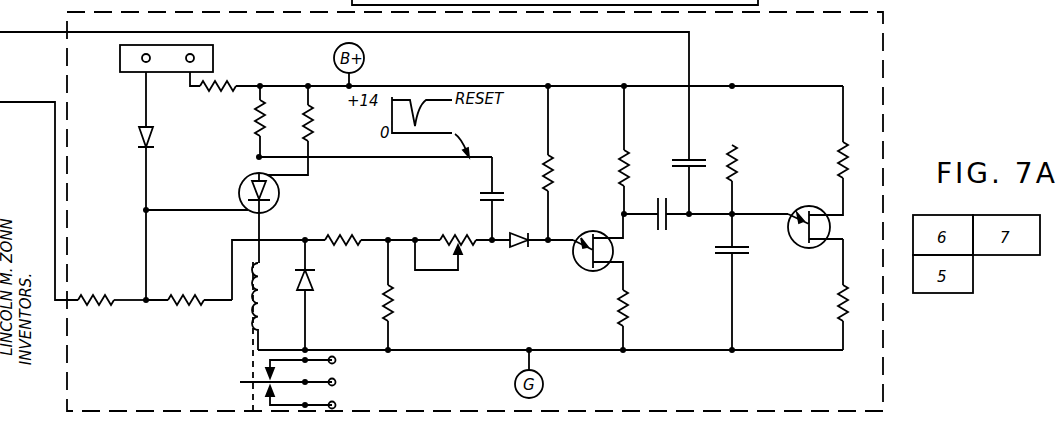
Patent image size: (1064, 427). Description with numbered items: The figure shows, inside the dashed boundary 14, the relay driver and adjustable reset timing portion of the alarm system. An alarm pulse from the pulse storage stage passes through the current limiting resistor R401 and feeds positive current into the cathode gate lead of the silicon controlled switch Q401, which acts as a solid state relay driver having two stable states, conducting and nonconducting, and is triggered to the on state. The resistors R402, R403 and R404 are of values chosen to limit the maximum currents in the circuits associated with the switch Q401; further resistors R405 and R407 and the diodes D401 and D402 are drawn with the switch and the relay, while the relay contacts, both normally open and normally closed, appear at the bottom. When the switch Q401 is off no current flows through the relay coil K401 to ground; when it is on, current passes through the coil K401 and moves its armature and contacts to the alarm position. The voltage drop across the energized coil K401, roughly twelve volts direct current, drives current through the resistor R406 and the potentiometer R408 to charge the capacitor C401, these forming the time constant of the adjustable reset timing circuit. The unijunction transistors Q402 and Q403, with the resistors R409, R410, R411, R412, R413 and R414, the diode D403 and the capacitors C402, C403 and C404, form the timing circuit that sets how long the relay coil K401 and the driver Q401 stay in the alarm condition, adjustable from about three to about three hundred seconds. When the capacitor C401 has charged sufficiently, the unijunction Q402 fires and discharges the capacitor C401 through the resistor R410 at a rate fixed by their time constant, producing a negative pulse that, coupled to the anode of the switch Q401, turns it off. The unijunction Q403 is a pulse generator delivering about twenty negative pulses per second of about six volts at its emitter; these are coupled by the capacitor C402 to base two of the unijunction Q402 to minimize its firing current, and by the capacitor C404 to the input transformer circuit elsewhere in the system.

The timer circuit module 14 is at (883, 76).
The current limiting resistor R401 is at (99, 297).
The resistor R402 is at (207, 295).
The resistor R403 is at (314, 127).
The resistor R404 is at (245, 133).
The resistor R405 is at (236, 98).
The resistor R406 is at (331, 212).
The resistor R407 is at (392, 300).
The potentiometer R408 is at (476, 228).
The resistor R409 is at (544, 149).
The resistor R410 is at (628, 312).
The resistor R411 is at (617, 153).
The resistor R412 is at (736, 162).
The resistor R413 is at (836, 307).
The resistor R414 is at (837, 162).
The diode D401 is at (136, 145).
The diode D402 is at (313, 284).
The diode D403 is at (519, 252).
The silicon controlled switch Q401 is at (239, 193).
The unijunction transistor Q402 is at (586, 279).
The unijunction transistor Q403 is at (819, 206).
The capacitor C401 is at (478, 197).
The capacitor C402 is at (661, 236).
The capacitor C403 is at (751, 256).
The capacitor C404 is at (672, 157).
The relay coil K401 is at (251, 306).